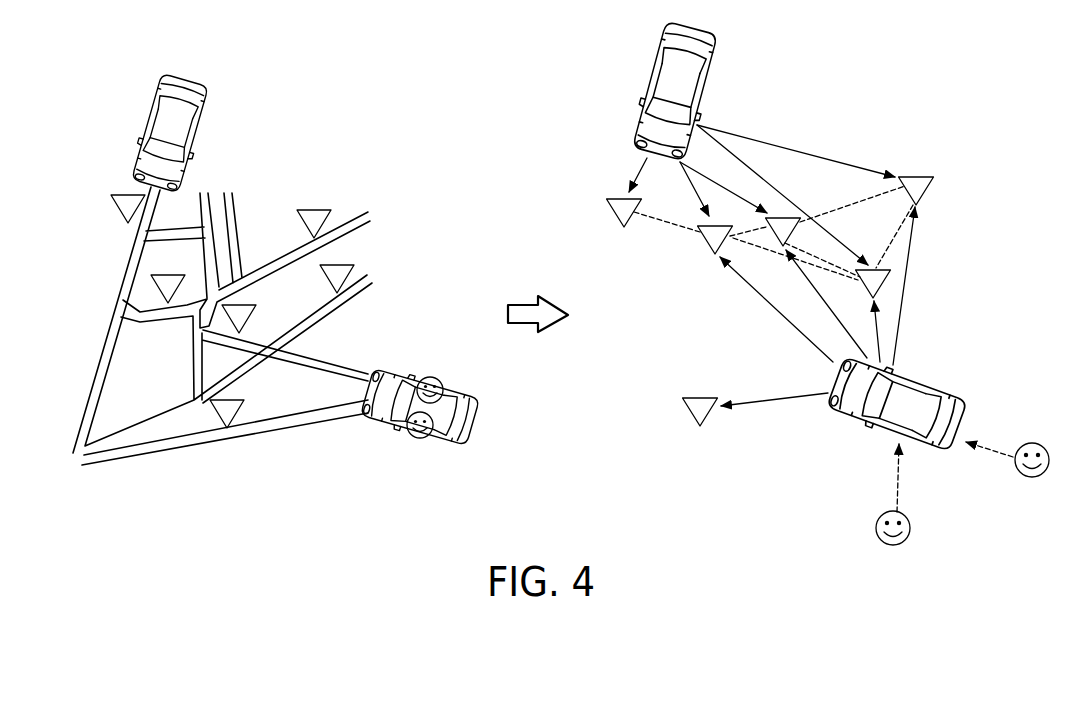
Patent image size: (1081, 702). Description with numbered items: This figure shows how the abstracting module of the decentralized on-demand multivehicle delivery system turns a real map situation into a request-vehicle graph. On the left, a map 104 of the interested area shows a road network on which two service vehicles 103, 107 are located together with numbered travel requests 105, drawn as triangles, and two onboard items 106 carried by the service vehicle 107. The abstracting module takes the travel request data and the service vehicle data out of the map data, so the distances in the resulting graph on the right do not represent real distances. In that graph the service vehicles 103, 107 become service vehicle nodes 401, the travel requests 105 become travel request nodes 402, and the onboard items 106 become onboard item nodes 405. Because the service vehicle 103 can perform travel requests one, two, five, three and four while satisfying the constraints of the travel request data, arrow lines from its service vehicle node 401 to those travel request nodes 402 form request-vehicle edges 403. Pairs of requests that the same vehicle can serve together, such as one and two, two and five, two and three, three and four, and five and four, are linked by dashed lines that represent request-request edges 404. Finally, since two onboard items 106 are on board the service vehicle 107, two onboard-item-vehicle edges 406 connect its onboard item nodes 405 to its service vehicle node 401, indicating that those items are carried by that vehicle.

The service vehicle 103 is at (203, 94).
The map 104 is at (233, 445).
The travel requests 105 is at (315, 208).
The onboard items 106 is at (420, 440).
The service vehicle 107 is at (383, 371).
The service vehicle node 401 is at (720, 44).
The travel request node 402 is at (917, 177).
The request-vehicle edge 403 is at (703, 170).
The request-request edge 404 is at (637, 229).
The onboard item node 405 is at (912, 527).
The onboard-item-vehicle edge 406 is at (895, 487).